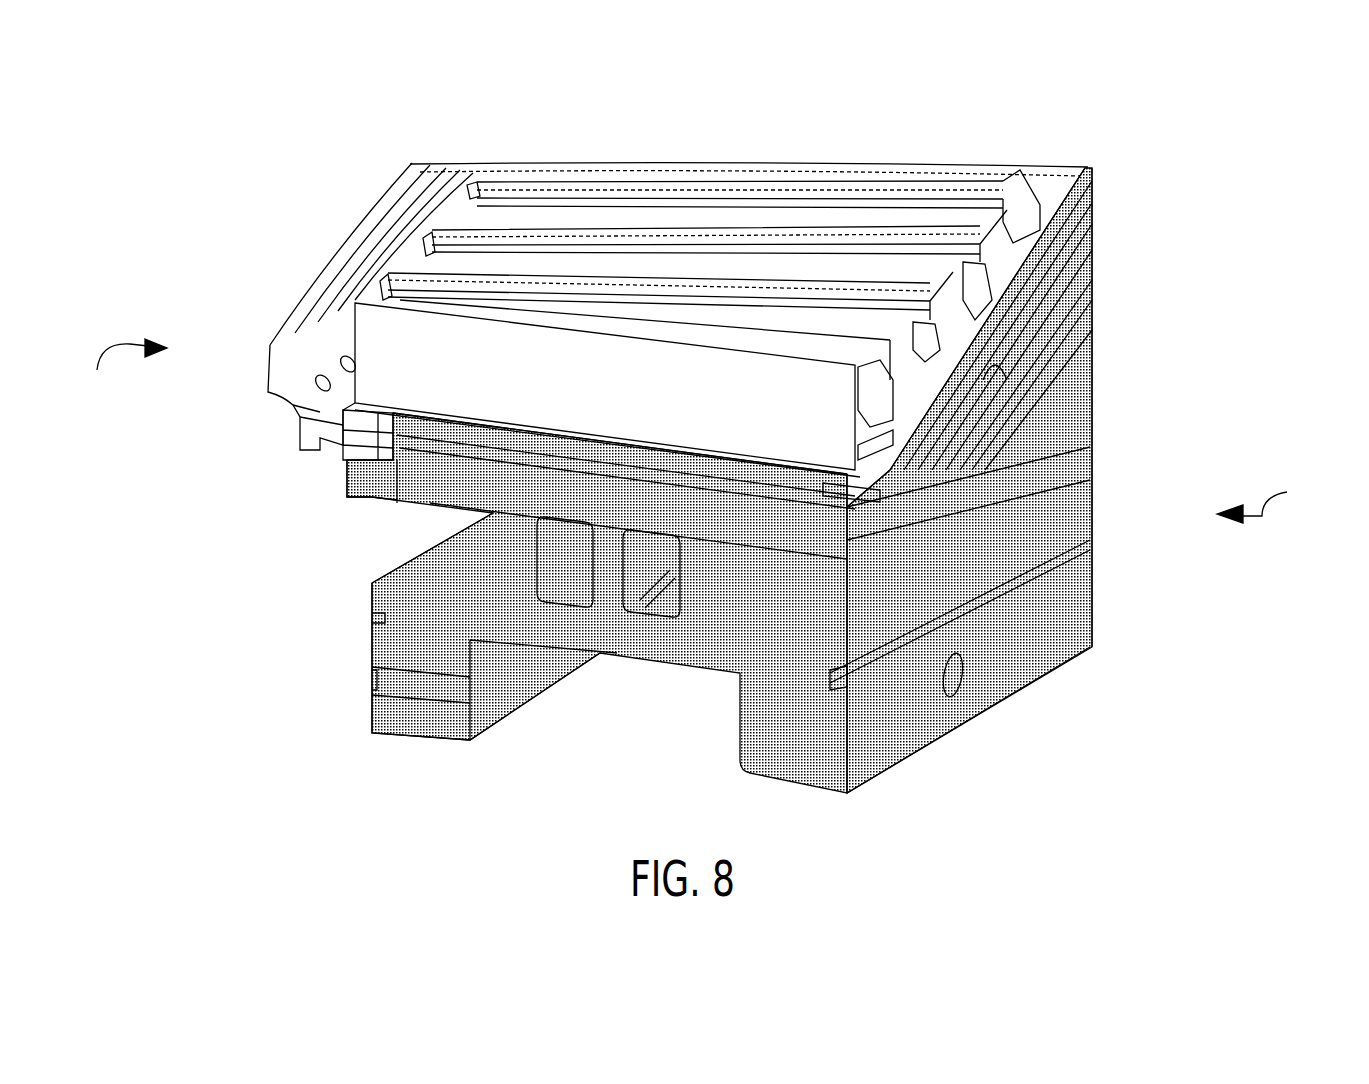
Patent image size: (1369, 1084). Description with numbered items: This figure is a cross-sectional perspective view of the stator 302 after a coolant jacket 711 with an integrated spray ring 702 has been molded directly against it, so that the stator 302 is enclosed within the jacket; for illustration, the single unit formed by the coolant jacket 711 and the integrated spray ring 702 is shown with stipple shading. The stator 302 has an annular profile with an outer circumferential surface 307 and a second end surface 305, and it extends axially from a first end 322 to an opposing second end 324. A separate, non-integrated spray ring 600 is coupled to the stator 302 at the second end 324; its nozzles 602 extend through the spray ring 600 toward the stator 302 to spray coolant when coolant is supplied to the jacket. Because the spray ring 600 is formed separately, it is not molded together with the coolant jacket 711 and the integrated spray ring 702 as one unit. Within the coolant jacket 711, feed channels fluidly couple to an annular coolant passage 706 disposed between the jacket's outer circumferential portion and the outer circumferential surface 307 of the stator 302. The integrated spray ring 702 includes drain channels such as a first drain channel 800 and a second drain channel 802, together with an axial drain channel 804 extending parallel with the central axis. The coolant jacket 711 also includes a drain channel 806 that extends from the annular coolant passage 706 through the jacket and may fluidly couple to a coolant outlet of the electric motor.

The stator 302 is at (988, 222).
The second end surface 305 is at (860, 452).
The outer circumferential surface 307 is at (380, 437).
The first end 322 is at (1269, 502).
The second end 324 is at (125, 368).
The spray ring 600 is at (342, 294).
The nozzles 602 is at (342, 357).
The integrated spray ring 702 is at (1023, 340).
The annular coolant passage 706 is at (592, 443).
The coolant jacket 711 is at (683, 668).
The first drain channel 800 is at (1003, 372).
The second drain channel 802 is at (1068, 260).
The drain channel 804 is at (843, 507).
The drain channel 806 is at (423, 493).